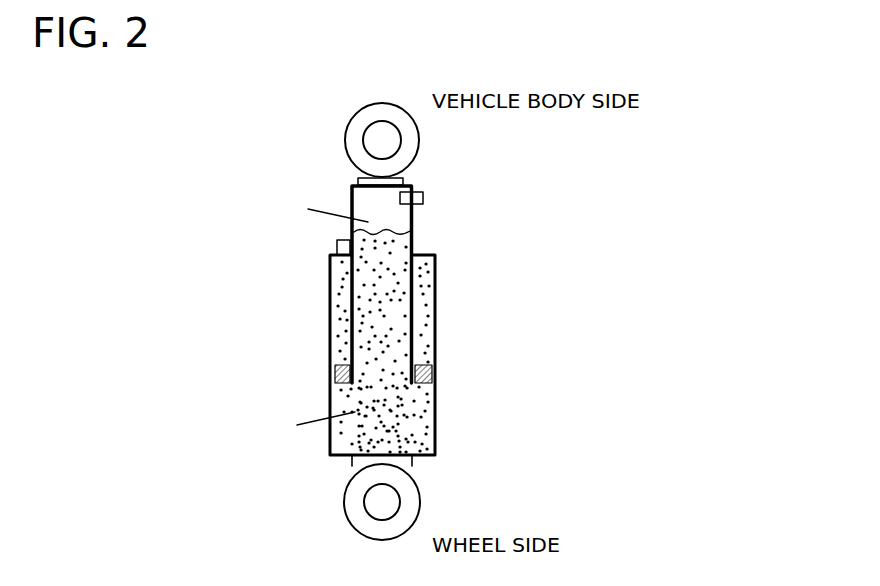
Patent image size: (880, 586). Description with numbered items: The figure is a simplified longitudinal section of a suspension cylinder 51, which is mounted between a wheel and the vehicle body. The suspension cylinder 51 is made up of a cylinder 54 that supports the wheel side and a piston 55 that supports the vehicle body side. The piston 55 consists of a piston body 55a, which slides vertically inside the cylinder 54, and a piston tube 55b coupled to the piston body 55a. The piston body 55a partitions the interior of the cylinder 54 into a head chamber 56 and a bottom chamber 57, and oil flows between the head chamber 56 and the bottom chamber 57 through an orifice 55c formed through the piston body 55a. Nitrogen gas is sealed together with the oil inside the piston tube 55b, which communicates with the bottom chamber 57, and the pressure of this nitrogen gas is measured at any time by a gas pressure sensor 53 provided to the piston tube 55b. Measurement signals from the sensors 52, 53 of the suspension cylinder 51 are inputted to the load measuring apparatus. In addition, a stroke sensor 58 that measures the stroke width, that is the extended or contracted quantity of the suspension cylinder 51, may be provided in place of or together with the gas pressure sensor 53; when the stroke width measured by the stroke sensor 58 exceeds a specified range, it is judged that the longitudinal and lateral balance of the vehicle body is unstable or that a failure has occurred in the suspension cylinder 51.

The suspension cylinder 51 is at (463, 327).
The sensor 52 is at (353, 180).
The gas pressure sensor 53 is at (424, 203).
The cylinder 54 is at (437, 423).
The piston 55 is at (343, 303).
The piston body 55a is at (333, 377).
The piston tube 55b is at (415, 290).
The orifice 55c is at (433, 368).
The head chamber 56 is at (330, 338).
The bottom chamber 57 is at (339, 433).
The stroke sensor 58 is at (337, 248).